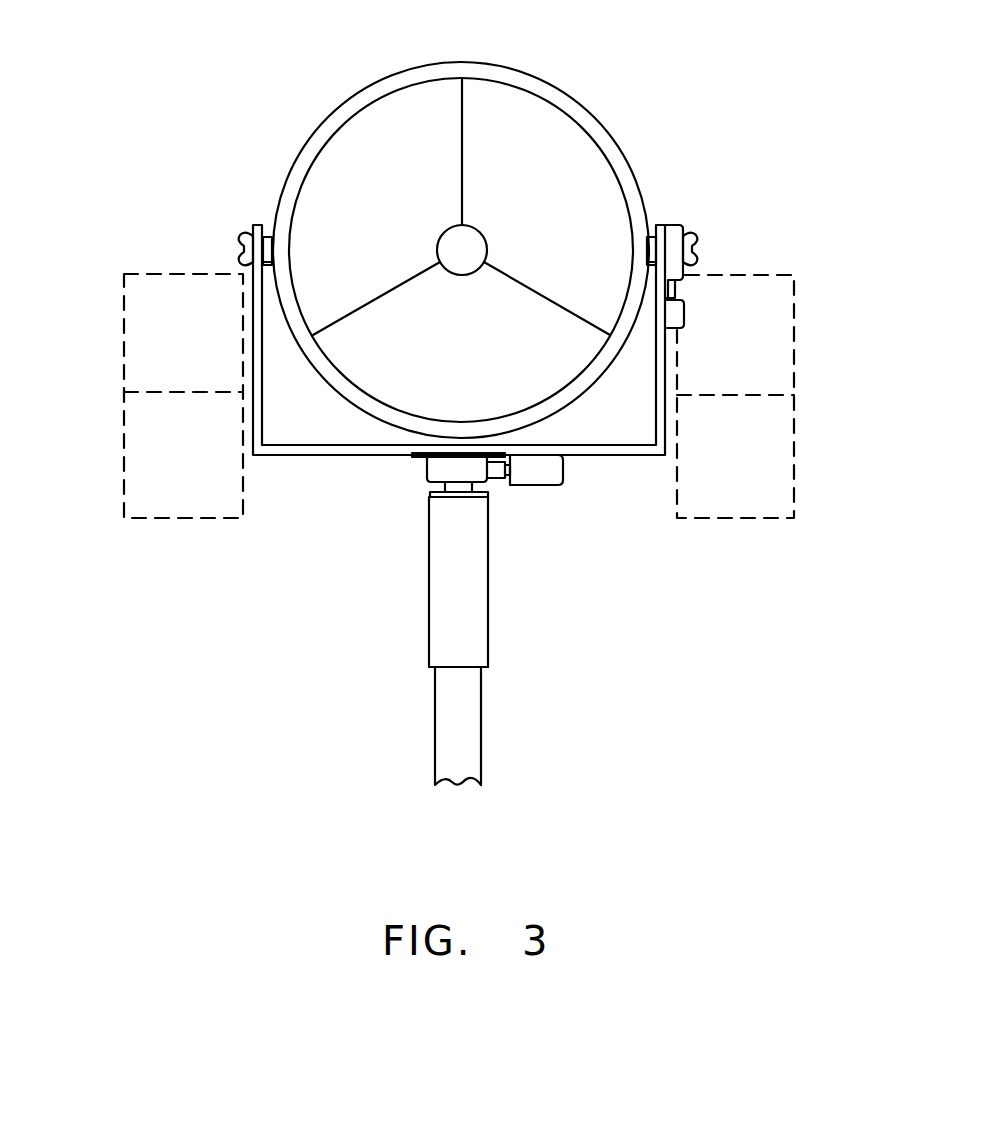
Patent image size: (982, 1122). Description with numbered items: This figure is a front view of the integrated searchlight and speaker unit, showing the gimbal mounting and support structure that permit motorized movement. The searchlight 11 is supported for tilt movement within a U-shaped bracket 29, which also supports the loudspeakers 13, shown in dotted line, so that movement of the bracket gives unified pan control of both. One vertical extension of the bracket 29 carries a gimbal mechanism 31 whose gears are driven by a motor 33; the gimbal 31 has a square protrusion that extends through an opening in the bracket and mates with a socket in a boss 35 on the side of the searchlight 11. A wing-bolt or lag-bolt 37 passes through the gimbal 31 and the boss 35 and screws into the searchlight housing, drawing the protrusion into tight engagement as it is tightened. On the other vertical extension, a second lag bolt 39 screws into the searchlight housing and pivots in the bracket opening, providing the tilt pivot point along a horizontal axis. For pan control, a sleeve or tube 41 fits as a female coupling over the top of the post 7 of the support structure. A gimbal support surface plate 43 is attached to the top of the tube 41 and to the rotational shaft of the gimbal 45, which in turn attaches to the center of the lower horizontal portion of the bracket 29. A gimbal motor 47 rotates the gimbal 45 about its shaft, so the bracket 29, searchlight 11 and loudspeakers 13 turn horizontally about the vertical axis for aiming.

The post 7 is at (481, 725).
The searchlight 11 is at (478, 62).
The loudspeakers 13 is at (467, 396).
The U-shaped bracket 29 is at (667, 225).
The gimbal mechanism 31 is at (677, 225).
The motor 33 is at (685, 316).
The boss 35 is at (654, 236).
The wing-bolt or lag-bolt 37 is at (697, 241).
The lag bolt 39 is at (240, 233).
The sleeve or tube 41 is at (488, 584).
The gimbal support surface plate 43 is at (430, 494).
The gimbal 45 is at (427, 468).
The gimbal motor 47 is at (540, 482).